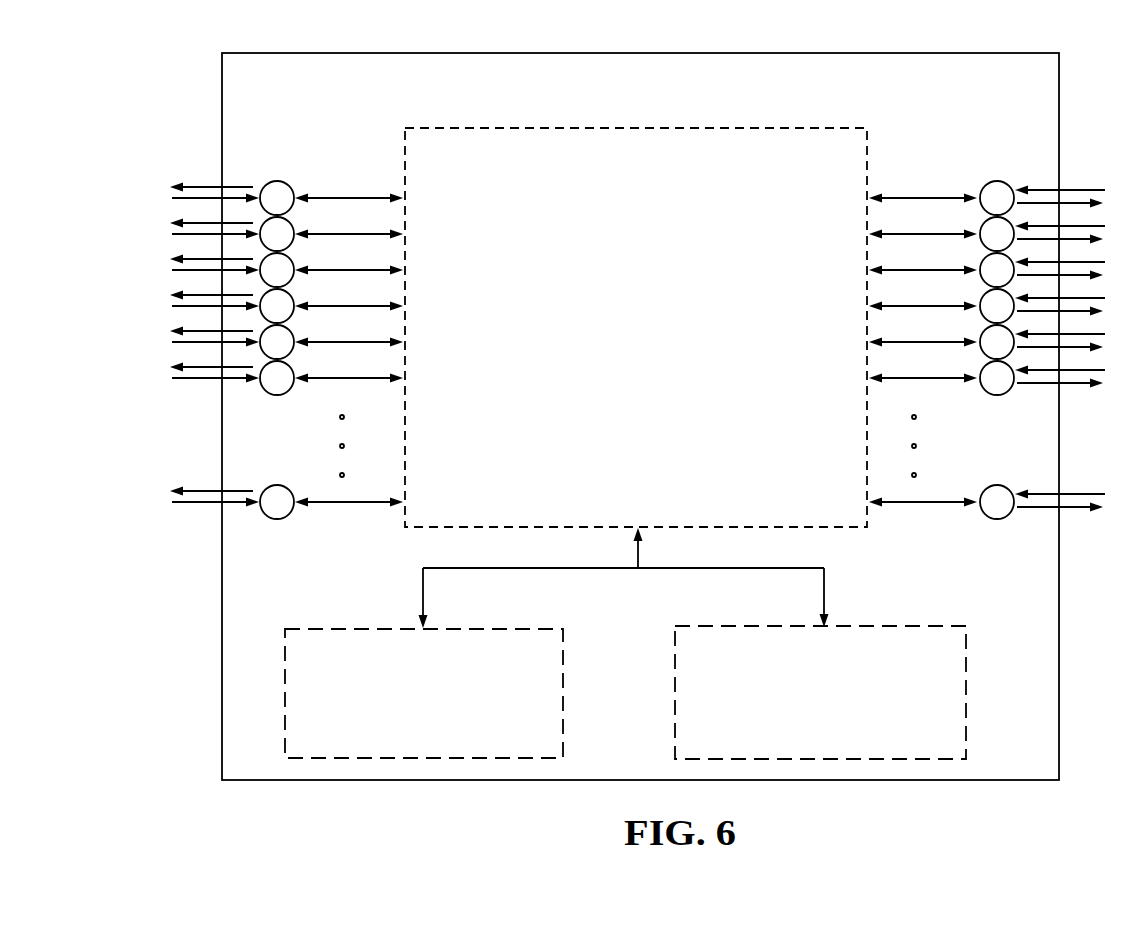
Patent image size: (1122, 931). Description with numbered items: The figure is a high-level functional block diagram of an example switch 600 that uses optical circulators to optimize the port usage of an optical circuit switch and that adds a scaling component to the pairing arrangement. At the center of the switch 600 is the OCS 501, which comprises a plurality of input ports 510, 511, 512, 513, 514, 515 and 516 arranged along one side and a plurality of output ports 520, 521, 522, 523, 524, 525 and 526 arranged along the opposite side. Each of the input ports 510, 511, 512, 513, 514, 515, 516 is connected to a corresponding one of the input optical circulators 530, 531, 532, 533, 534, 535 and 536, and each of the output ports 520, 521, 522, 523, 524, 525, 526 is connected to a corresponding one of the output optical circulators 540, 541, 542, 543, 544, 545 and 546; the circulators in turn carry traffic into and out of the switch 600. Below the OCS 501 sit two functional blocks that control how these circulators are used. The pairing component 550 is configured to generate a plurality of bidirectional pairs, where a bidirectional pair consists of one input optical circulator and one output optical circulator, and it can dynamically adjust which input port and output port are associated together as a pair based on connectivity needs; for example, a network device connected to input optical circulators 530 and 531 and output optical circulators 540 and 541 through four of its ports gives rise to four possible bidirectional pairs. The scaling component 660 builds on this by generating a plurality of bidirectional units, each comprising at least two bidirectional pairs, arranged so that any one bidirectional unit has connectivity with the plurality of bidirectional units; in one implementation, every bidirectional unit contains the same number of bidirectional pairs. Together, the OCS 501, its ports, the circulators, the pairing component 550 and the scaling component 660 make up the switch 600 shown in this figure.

The switch 600 is at (1023, 771).
The OCS 501 is at (617, 195).
The input port 510 is at (415, 208).
The input port 511 is at (415, 244).
The input port 512 is at (415, 280).
The input port 513 is at (415, 316).
The input port 514 is at (415, 352).
The input port 515 is at (415, 388).
The input port 516 is at (415, 512).
The output port 520 is at (827, 208).
The output port 521 is at (827, 244).
The output port 522 is at (827, 280).
The output port 523 is at (827, 316).
The output port 524 is at (827, 352).
The output port 525 is at (827, 388).
The output port 526 is at (827, 512).
The input optical circulator 530 is at (265, 206).
The input optical circulator 531 is at (265, 242).
The input optical circulator 532 is at (265, 278).
The input optical circulator 533 is at (265, 314).
The input optical circulator 534 is at (265, 350).
The input optical circulator 535 is at (265, 386).
The input optical circulator 536 is at (265, 510).
The output optical circulator 540 is at (985, 206).
The output optical circulator 541 is at (985, 242).
The output optical circulator 542 is at (985, 278).
The output optical circulator 543 is at (985, 314).
The output optical circulator 544 is at (985, 350).
The output optical circulator 545 is at (985, 386).
The output optical circulator 546 is at (985, 510).
The pairing component 550 is at (526, 750).
The scaling component 660 is at (929, 751).